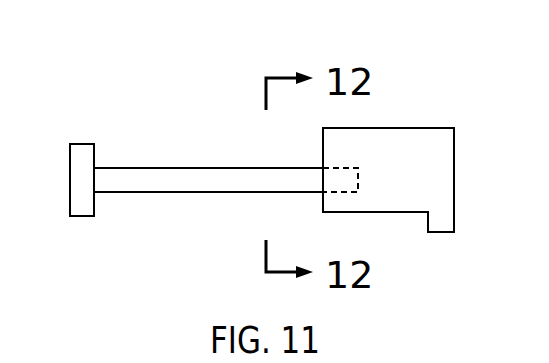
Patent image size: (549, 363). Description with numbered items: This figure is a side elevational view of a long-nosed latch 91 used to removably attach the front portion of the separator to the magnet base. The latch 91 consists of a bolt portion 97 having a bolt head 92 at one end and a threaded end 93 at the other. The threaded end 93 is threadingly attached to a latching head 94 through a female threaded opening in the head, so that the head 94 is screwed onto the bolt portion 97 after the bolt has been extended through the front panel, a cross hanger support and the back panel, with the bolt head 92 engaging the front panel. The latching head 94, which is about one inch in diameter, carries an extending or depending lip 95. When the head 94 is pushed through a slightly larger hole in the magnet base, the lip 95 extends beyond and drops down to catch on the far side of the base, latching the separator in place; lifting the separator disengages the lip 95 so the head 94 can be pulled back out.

The long-nosed latch 91 is at (264, 164).
The bolt head 92 is at (83, 143).
The threaded end 93 is at (338, 166).
The latching head 94 is at (433, 128).
The extending lip 95 is at (443, 233).
The bolt portion 97 is at (172, 167).